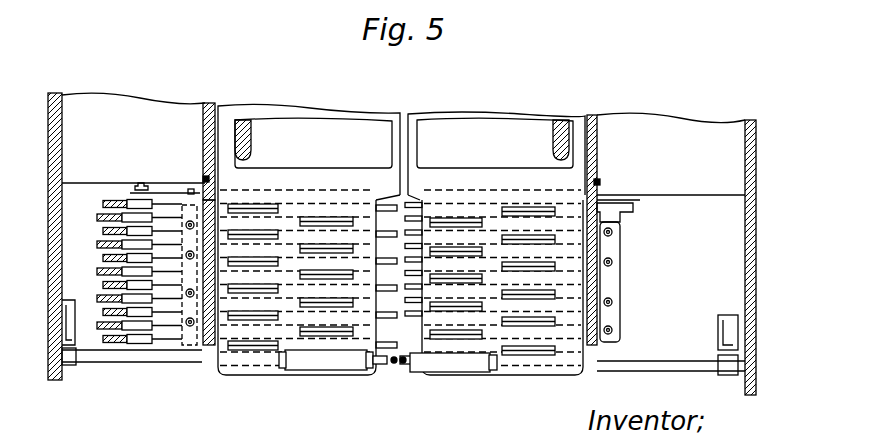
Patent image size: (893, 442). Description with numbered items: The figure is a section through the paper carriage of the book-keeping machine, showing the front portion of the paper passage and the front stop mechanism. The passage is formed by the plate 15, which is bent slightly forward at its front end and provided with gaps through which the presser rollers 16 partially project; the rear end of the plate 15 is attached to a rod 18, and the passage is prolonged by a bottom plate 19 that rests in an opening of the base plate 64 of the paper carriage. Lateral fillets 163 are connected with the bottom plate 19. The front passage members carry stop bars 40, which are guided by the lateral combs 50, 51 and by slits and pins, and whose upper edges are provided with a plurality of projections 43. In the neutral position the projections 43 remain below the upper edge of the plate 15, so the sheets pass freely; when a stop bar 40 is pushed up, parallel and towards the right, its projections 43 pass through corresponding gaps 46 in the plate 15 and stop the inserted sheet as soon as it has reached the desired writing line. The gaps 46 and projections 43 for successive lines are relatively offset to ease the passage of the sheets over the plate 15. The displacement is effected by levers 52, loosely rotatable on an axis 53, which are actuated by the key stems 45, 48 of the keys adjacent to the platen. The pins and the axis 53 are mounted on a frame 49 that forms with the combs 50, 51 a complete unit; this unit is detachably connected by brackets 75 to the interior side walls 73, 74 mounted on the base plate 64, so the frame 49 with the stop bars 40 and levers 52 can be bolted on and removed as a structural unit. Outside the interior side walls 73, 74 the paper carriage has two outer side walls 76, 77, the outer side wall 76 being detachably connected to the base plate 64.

The plate 15 is at (264, 375).
The presser rollers 16 is at (366, 362).
The rod 18 is at (204, 178).
The plate 19 is at (428, 135).
The stop bars 40 is at (175, 318).
The projections 43 is at (330, 219).
The key stem 45 is at (100, 210).
The gaps 46 is at (310, 221).
The key stem 48 is at (108, 346).
The frame 49 is at (158, 193).
The lateral comb 50 is at (208, 346).
The lateral comb 51 is at (618, 216).
The levers 52 is at (128, 204).
The axis 53 is at (140, 186).
The base plate 64 is at (160, 115).
The interior side wall 73 is at (211, 103).
The interior side wall 74 is at (598, 134).
The brackets 75 is at (184, 336).
The outer side wall 76 is at (70, 130).
The outer side wall 77 is at (745, 288).
The lateral fillets 163 is at (248, 122).